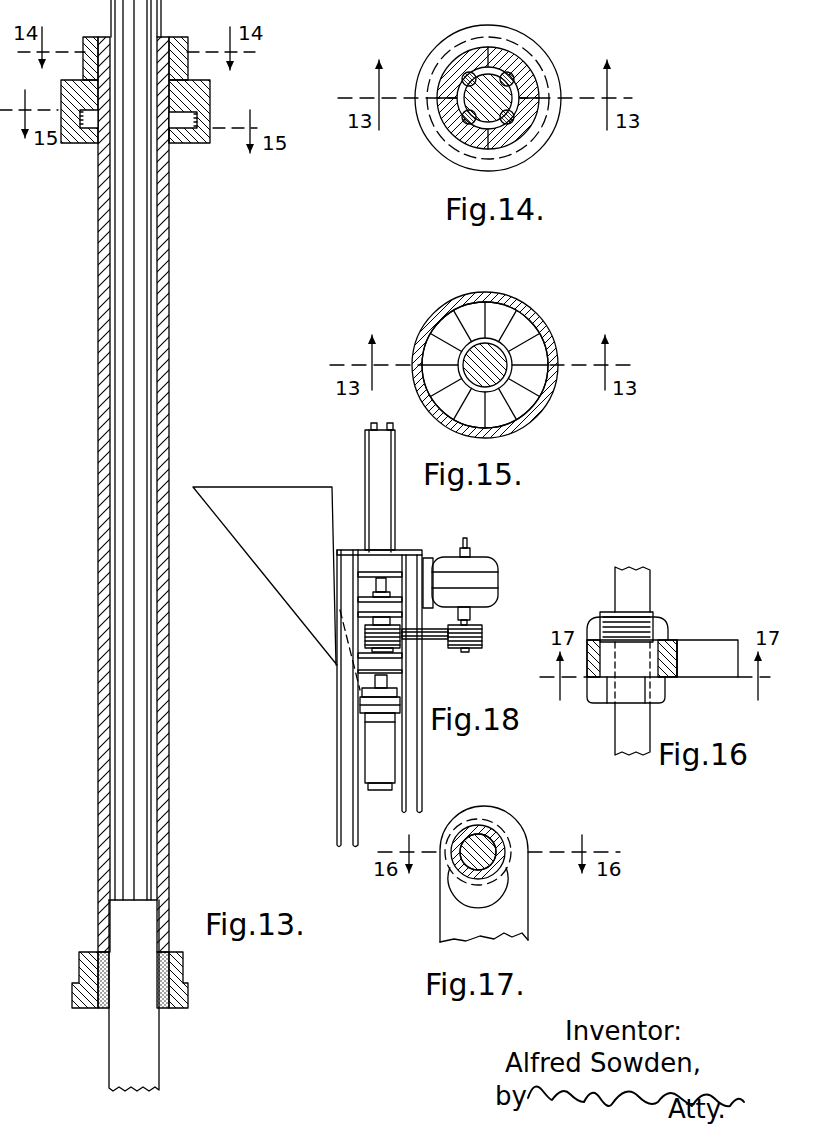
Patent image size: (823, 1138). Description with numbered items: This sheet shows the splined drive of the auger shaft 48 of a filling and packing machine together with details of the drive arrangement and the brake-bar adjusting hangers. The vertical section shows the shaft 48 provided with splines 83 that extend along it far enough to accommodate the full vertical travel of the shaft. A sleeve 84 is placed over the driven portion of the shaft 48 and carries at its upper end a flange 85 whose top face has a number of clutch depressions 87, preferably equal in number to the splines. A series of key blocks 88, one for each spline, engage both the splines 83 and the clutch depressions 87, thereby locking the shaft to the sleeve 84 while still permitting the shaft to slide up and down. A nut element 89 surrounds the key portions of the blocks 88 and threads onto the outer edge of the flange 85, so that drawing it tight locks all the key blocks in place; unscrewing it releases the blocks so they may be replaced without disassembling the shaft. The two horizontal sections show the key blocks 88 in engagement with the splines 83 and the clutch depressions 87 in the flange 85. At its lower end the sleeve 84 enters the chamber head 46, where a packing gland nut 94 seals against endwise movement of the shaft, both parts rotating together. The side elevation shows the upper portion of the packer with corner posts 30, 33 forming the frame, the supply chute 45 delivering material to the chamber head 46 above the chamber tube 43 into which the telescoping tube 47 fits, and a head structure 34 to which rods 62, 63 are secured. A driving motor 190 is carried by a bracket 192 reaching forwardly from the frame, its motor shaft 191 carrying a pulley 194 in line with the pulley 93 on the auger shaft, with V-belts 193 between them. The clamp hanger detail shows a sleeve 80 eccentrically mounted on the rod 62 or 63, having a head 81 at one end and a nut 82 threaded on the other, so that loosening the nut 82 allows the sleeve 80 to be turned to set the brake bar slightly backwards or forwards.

In FIG. 18, the corner post 30 is at (418, 745).
In FIG. 18, the corner post 33 is at (338, 723).
In FIG. 18, the head structure 34 is at (382, 507).
In FIG. 18, the chamber tube 43 is at (385, 766).
In FIG. 18, the supply chute 45 is at (270, 571).
In FIG. 18, the chamber head 46 is at (362, 689).
In FIG. 18, the telescoping tube 47 is at (376, 788).
In FIG. 13, the auger shaft 48 is at (118, 1060).
In FIG. 14, the auger shaft 48 is at (470, 145).
In FIG. 18, the auger shaft 48 is at (380, 576).
In FIG. 16, the rod 62 is at (648, 592).
In FIG. 17, the rod 62 is at (492, 840).
In FIG. 16, the rod 63 is at (718, 588).
In FIG. 17, the rod 63 is at (578, 807).
In FIG. 16, the sleeve 80 is at (625, 660).
In FIG. 17, the sleeve 80 is at (457, 870).
In FIG. 16, the head 81 is at (660, 692).
In FIG. 16, the nut 82 is at (668, 628).
In FIG. 17, the nut 82 is at (497, 889).
In FIG. 13, the splines 83 is at (122, 590).
In FIG. 14, the splines 83 is at (464, 150).
In FIG. 15, the splines 83 is at (466, 346).
In FIG. 13, the sleeve 84 is at (170, 441).
In FIG. 18, the sleeve 84 is at (372, 584).
In FIG. 13, the flange 85 is at (173, 143).
In FIG. 15, the flange 85 is at (538, 386).
In FIG. 13, the clutch depressions 87 is at (193, 118).
In FIG. 15, the clutch depressions 87 is at (500, 318).
In FIG. 13, the key blocks 88 is at (97, 66).
In FIG. 14, the key blocks 88 is at (530, 83).
In FIG. 13, the nut element 89 is at (64, 90).
In FIG. 14, the nut element 89 is at (500, 150).
In FIG. 15, the nut element 89 is at (546, 320).
In FIG. 18, the pulley 93 is at (365, 628).
In FIG. 13, the packing gland nut 94 is at (186, 994).
In FIG. 18, the driving motor 190 is at (490, 586).
In FIG. 18, the motor shaft 191 is at (470, 622).
In FIG. 18, the bracket 192 is at (432, 560).
In FIG. 18, the V-belts 193 is at (434, 640).
In FIG. 18, the pulley 194 is at (481, 646).